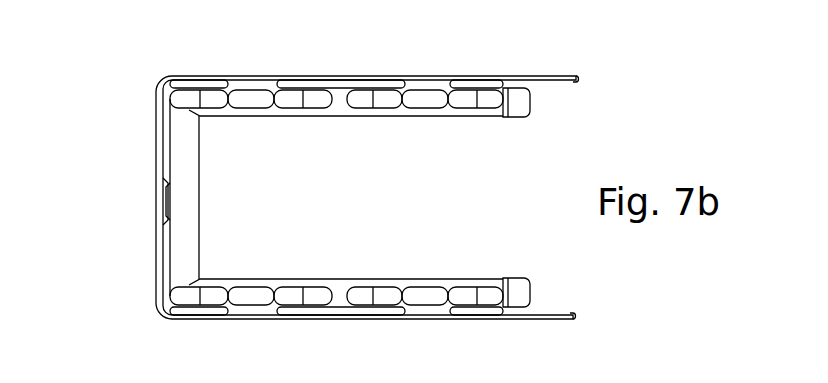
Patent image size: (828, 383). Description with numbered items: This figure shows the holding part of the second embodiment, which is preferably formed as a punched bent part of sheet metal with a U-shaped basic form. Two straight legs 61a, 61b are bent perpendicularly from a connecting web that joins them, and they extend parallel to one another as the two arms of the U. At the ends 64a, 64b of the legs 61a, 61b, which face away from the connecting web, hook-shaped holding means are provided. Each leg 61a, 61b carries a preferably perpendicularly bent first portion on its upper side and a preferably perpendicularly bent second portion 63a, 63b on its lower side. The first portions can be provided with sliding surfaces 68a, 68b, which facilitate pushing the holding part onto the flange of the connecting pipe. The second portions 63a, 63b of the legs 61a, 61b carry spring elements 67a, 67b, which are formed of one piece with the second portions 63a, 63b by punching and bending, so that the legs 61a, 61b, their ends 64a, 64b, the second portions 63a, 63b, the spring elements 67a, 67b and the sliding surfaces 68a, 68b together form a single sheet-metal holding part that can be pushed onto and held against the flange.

The leg 61a is at (199, 318).
The leg 61b is at (490, 70).
The second portion 63a is at (420, 300).
The second portion 63b is at (427, 100).
The end of leg 64a is at (570, 318).
The end of leg 64b is at (575, 70).
The spring element 67a is at (181, 294).
The spring element 67b is at (181, 101).
The sliding surface 68a is at (518, 294).
The sliding surface 68b is at (524, 103).